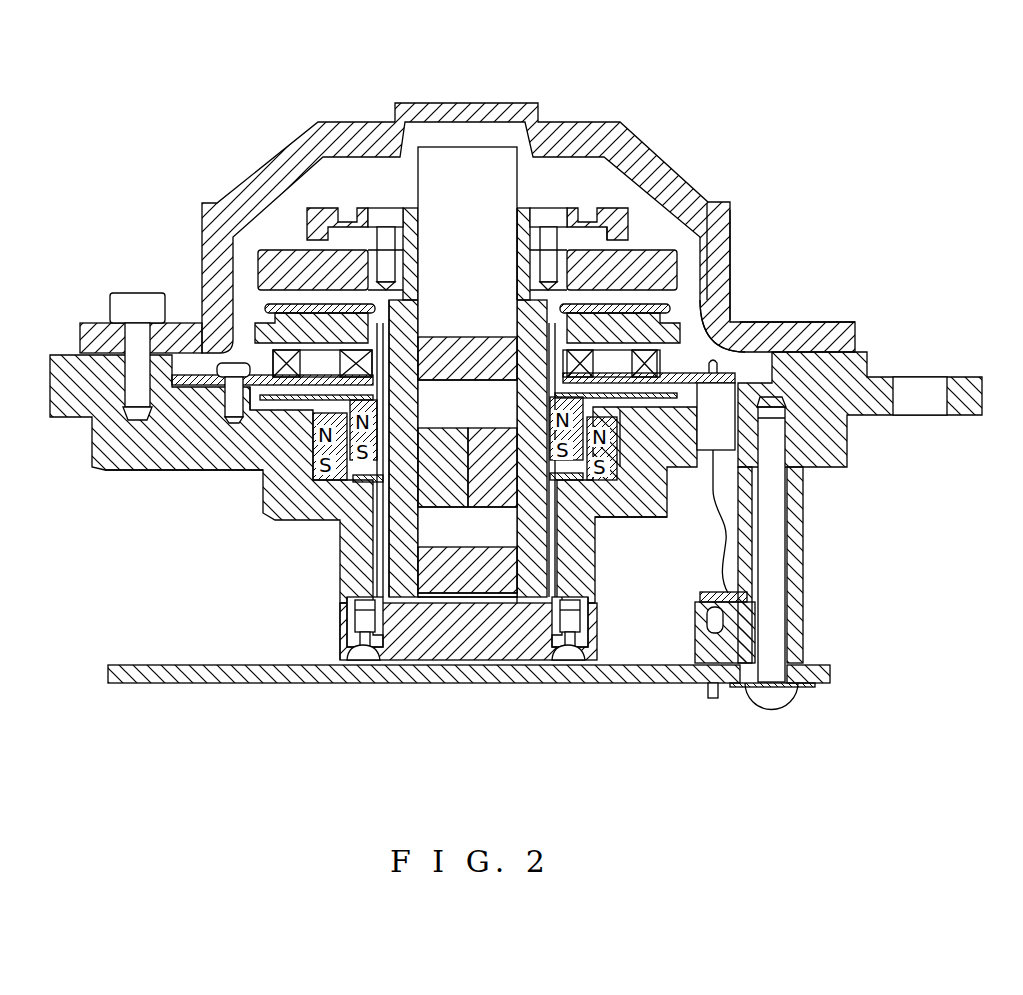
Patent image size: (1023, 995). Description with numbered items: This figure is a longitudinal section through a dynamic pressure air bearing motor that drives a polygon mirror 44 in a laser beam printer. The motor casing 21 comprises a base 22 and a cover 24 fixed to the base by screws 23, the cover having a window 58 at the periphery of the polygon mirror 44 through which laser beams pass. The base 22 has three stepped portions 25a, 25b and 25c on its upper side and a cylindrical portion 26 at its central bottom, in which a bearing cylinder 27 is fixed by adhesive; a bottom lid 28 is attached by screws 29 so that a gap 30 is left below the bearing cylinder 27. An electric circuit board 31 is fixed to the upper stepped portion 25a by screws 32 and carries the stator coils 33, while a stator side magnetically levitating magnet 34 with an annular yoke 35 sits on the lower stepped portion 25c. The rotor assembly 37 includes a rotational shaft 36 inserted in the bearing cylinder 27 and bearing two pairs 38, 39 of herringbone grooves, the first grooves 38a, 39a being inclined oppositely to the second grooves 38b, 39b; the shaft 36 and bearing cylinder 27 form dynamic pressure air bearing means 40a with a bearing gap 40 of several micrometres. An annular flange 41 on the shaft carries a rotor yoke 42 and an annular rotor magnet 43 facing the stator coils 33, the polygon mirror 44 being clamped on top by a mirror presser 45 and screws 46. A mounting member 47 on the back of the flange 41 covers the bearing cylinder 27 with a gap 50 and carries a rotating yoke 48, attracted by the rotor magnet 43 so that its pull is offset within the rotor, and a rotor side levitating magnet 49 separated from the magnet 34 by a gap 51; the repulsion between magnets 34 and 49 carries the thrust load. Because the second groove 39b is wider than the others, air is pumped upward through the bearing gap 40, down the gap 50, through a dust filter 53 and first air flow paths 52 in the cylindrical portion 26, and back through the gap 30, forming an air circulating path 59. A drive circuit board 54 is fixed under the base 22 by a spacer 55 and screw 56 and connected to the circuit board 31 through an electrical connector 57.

The motor casing 21 is at (83, 443).
The base 22 is at (127, 467).
The screws 23 is at (127, 293).
The cover 24 is at (313, 122).
The upper stepped portion 25a is at (157, 357).
The stepped portion 25b is at (263, 410).
The lower stepped portion 25c is at (340, 485).
The cylindrical portion 26 is at (340, 595).
The bearing cylinder 27 is at (593, 560).
The bottom lid 28 is at (470, 653).
The screws 29 is at (360, 653).
The gap 30 is at (410, 603).
The electric circuit board 31 is at (197, 377).
The screws 32 is at (233, 357).
The stator coils 33 is at (747, 318).
The annular magnet 34 is at (643, 420).
The annular yoke 35 is at (700, 450).
The rotational shaft 36 is at (485, 165).
The rotor assembly 37 is at (527, 192).
The upper pair of herringbone grooves 38 is at (447, 330).
The first groove 38a is at (505, 316).
The second groove 38b is at (490, 415).
The lower pair of herringbone grooves 39 is at (490, 603).
The first groove 39a is at (490, 520).
The second groove 39b is at (457, 590).
The bearing gap 40 is at (527, 603).
The dynamic pressure air bearing means 40a is at (532, 605).
The annular flange 41 is at (513, 268).
The rotor yoke 42 is at (730, 282).
The annular rotor magnet 43 is at (707, 320).
The polygon mirror 44 is at (660, 250).
The mirror presser 45 is at (617, 208).
The screws 46 is at (553, 208).
The mounting member 47 is at (440, 340).
The rotating yoke 48 is at (757, 415).
The rotor side magnetically levitating magnet 49 is at (598, 482).
The gap 50 is at (665, 310).
The gap 51 is at (855, 325).
The first air flow paths 52 is at (343, 633).
The dust filter 53 is at (375, 555).
The circuit board 54 is at (225, 683).
The spacer 55 is at (805, 608).
The screw 56 is at (775, 710).
The electrical connector 57 is at (728, 648).
The window 58 is at (730, 227).
The air circulating path 59 is at (345, 652).